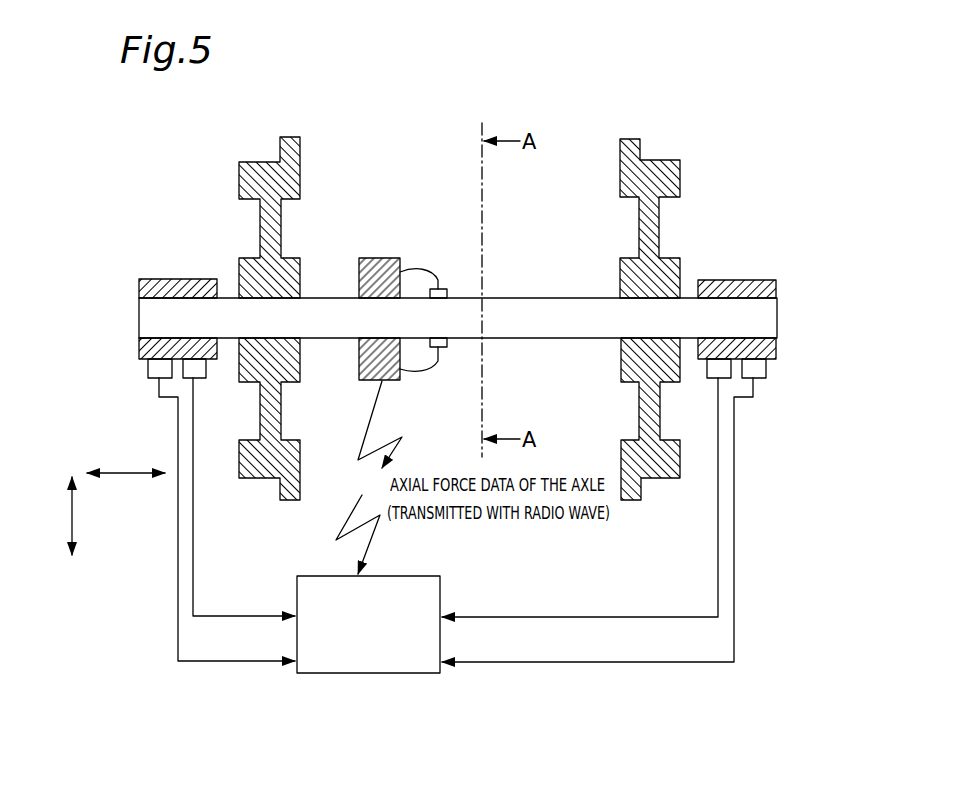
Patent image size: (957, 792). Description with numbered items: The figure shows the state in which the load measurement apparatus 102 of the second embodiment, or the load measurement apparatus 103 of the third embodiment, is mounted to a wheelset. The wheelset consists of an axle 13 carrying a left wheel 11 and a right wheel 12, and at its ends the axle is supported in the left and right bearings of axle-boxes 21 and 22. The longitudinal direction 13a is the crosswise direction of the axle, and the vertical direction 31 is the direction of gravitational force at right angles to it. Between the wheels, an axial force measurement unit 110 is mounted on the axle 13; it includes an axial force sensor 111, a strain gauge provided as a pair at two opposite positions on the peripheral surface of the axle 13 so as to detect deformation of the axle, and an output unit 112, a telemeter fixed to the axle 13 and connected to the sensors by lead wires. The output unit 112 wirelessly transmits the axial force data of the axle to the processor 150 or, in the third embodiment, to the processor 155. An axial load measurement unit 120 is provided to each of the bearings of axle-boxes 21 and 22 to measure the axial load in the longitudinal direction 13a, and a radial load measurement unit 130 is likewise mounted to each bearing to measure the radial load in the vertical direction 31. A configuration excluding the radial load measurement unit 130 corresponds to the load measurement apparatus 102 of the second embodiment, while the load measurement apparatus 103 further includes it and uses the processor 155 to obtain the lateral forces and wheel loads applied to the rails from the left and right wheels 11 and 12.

The left wheel 11 is at (239, 167).
The right wheel 12 is at (680, 182).
The axle 13 is at (577, 312).
The longitudinal direction 13a is at (122, 474).
The axle-box bearing 21 is at (153, 279).
The axle-box bearing 22 is at (760, 280).
The vertical direction 31 is at (68, 517).
The load measurement apparatus 102 is at (401, 533).
The load measurement apparatus 103 is at (158, 629).
The axial force measurement unit 110 is at (448, 157).
The axial force sensor 111 is at (445, 288).
The output unit 112 is at (360, 262).
The axial load measurement unit 120 is at (205, 384).
The radial load measurement unit 130 is at (145, 371).
The processor 150 is at (334, 654).
The processor 155 is at (360, 677).